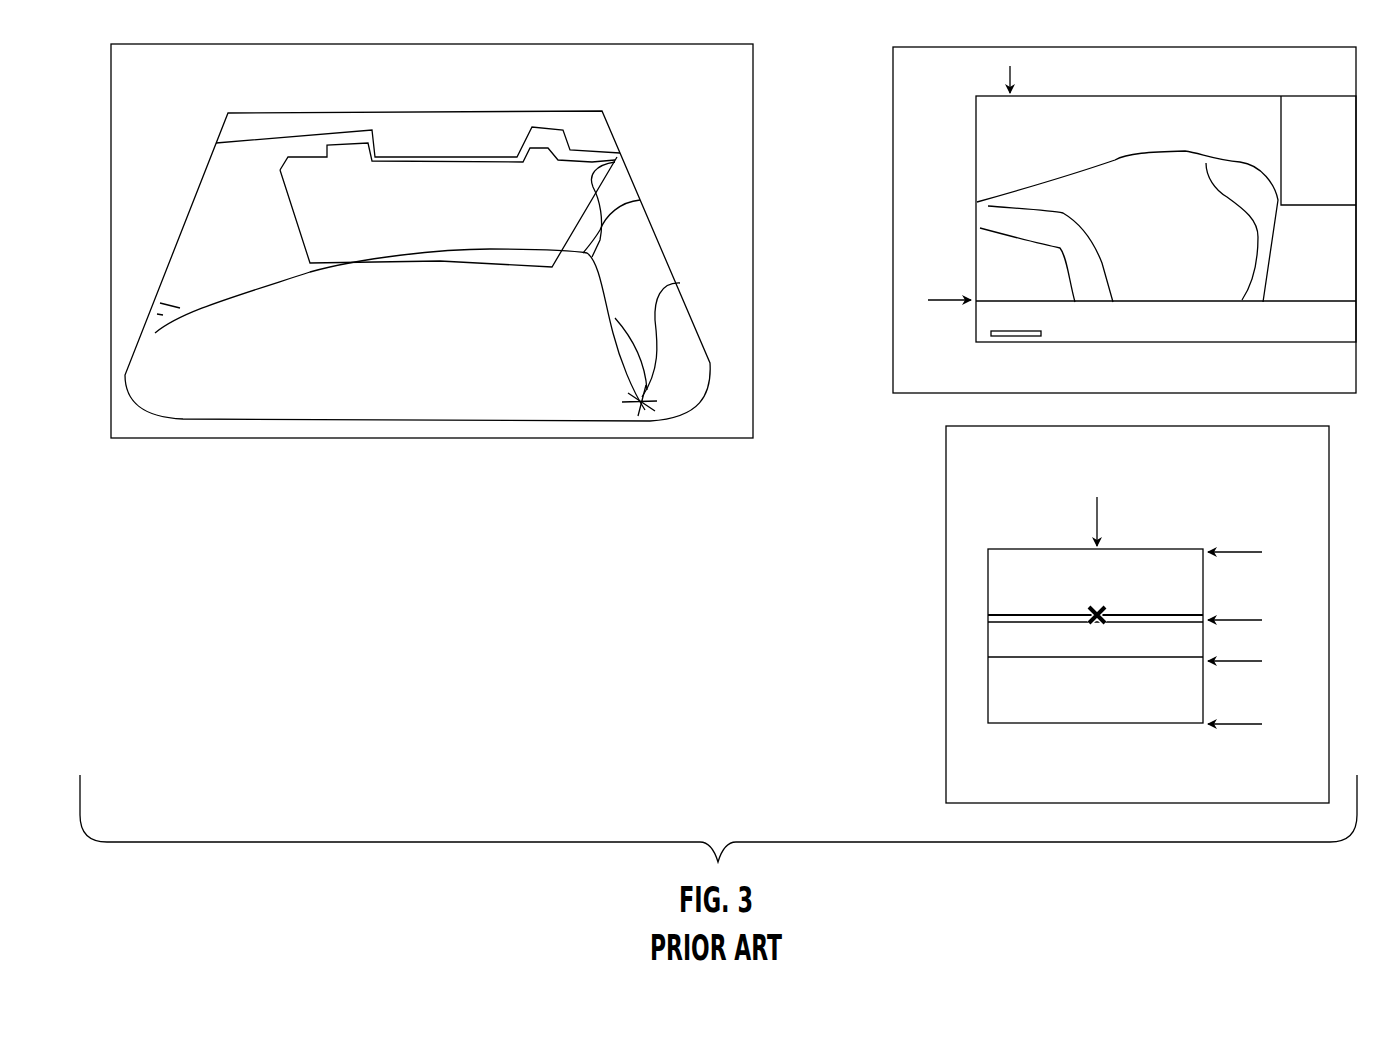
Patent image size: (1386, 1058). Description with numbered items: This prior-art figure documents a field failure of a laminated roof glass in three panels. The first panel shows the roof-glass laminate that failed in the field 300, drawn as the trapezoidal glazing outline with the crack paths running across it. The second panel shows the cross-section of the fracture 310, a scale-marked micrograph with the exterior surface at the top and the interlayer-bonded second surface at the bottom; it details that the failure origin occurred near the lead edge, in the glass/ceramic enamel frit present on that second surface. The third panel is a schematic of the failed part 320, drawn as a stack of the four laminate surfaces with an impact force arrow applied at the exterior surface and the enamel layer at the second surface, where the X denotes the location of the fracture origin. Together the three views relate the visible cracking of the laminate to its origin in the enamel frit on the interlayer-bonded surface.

The roof-glass laminate that failed in the field 300 is at (549, 442).
The cross-section of the fracture 310 is at (878, 375).
The schematic of the failed part 320 is at (917, 705).